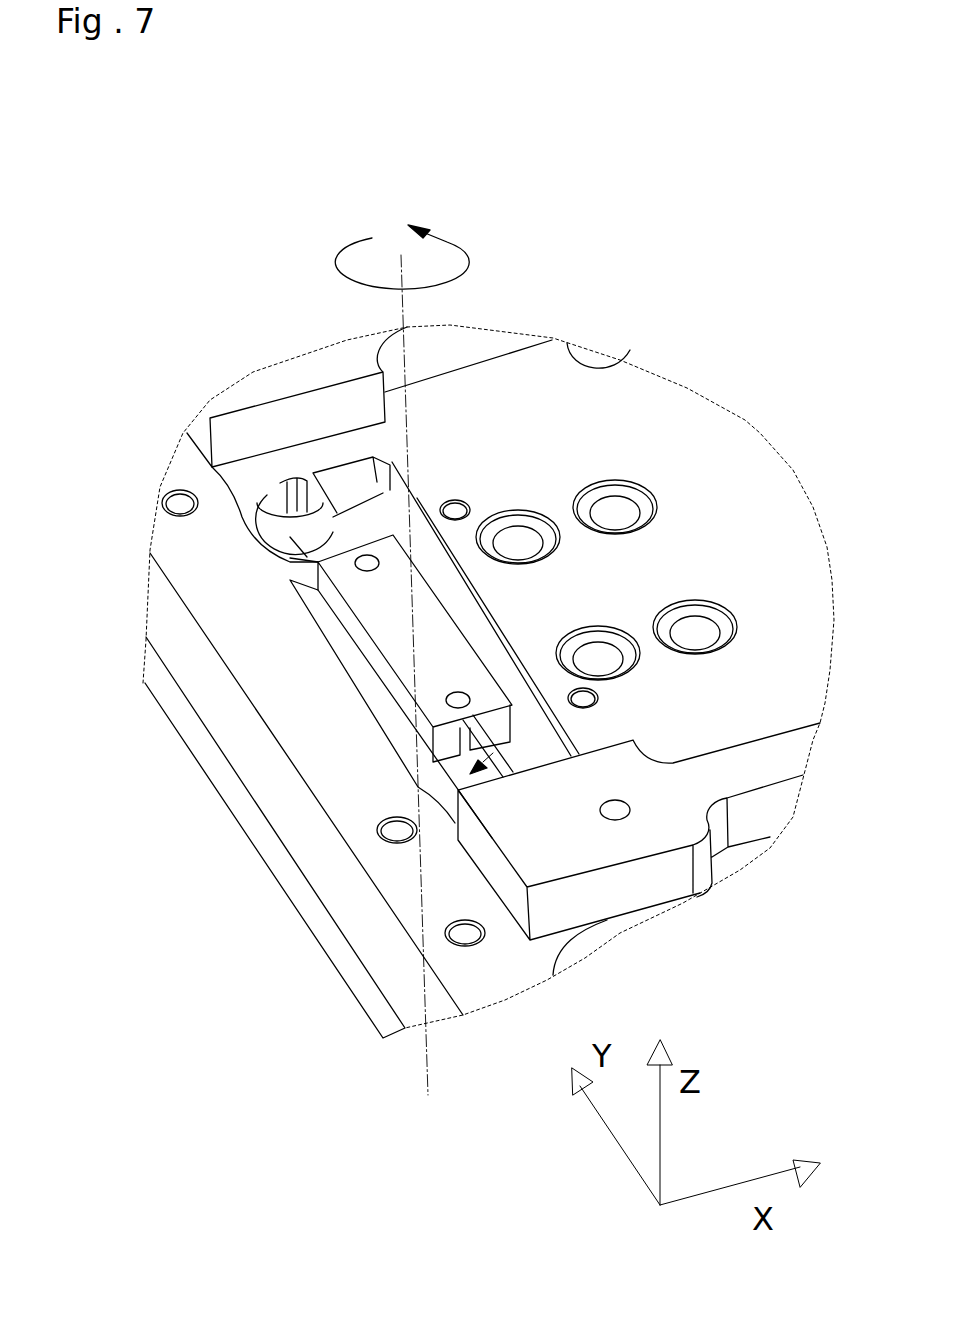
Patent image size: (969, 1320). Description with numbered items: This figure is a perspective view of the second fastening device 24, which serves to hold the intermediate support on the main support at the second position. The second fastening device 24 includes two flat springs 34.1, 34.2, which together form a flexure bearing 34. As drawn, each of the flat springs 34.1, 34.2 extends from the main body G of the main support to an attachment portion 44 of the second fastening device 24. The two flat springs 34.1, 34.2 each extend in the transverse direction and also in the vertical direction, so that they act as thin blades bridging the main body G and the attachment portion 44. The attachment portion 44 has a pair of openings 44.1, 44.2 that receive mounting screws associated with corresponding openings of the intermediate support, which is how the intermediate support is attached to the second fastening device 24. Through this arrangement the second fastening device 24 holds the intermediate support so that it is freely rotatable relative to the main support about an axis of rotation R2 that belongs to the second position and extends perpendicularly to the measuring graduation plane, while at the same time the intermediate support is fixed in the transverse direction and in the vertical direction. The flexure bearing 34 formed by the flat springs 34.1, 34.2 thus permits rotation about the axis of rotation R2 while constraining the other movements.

The second fastening device 24 is at (188, 252).
The flexure bearing 34 is at (460, 790).
The flat spring 34.1 is at (470, 755).
The flat spring 34.2 is at (207, 412).
The attachment portion 44 is at (390, 610).
The opening 44.1 is at (433, 727).
The opening 44.2 is at (233, 493).
The main body G is at (653, 423).
The axis of rotation R2 is at (427, 1068).